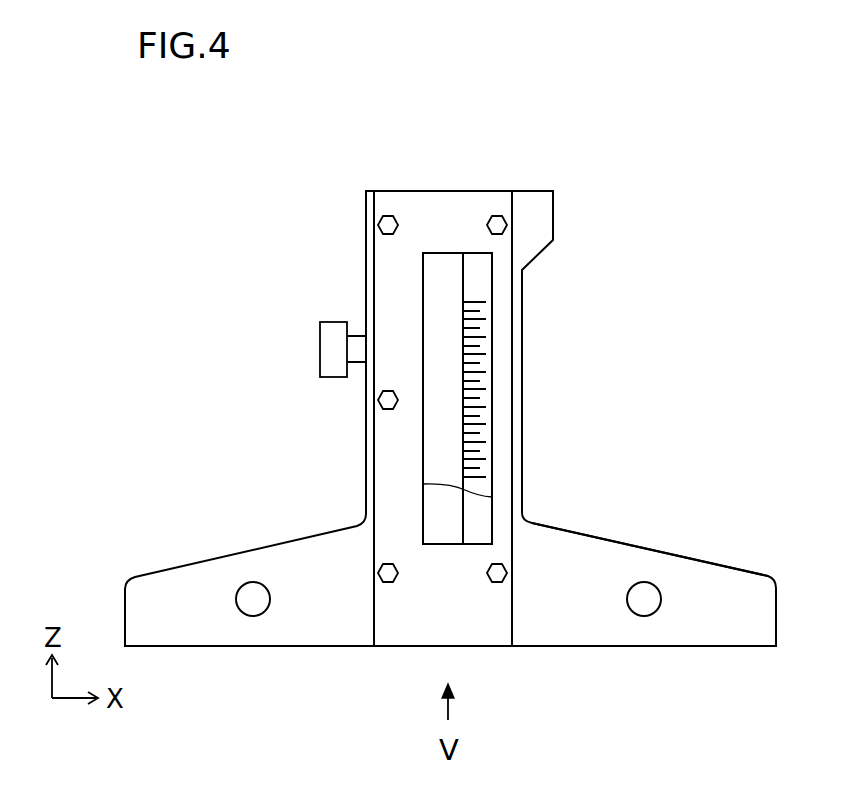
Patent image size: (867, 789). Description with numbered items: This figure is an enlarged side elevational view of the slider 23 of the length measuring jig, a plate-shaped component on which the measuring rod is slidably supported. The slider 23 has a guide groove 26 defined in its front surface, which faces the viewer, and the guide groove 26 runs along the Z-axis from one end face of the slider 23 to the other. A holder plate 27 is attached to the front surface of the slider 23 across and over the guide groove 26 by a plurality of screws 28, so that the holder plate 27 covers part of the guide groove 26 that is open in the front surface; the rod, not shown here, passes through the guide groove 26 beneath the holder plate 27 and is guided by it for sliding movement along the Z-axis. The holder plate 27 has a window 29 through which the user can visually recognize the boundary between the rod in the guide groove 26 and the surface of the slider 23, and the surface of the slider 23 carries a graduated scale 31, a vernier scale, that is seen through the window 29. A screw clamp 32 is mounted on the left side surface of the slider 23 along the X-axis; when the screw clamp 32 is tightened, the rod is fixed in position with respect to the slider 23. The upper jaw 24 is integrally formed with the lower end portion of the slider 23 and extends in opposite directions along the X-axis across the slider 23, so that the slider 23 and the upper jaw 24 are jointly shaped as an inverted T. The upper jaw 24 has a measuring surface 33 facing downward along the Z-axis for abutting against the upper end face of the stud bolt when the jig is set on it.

The slider 23 is at (526, 388).
The upper jaw 24 is at (687, 556).
The guide groove 26 is at (440, 262).
The holder plate 27 is at (512, 431).
The screws 28 is at (378, 226).
The window 29 is at (492, 497).
The graduated scale 31 is at (482, 350).
The screw clamp 32 is at (320, 350).
The measuring surface 33 is at (210, 646).